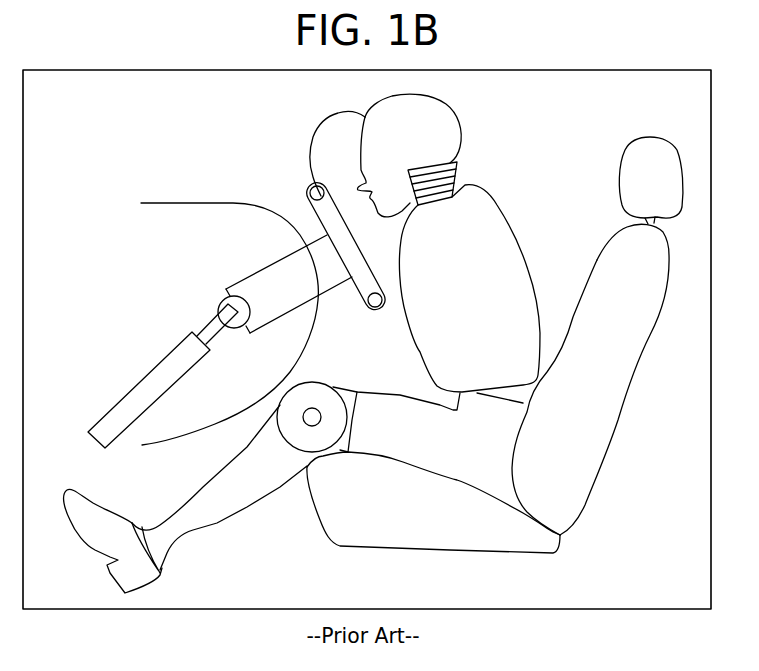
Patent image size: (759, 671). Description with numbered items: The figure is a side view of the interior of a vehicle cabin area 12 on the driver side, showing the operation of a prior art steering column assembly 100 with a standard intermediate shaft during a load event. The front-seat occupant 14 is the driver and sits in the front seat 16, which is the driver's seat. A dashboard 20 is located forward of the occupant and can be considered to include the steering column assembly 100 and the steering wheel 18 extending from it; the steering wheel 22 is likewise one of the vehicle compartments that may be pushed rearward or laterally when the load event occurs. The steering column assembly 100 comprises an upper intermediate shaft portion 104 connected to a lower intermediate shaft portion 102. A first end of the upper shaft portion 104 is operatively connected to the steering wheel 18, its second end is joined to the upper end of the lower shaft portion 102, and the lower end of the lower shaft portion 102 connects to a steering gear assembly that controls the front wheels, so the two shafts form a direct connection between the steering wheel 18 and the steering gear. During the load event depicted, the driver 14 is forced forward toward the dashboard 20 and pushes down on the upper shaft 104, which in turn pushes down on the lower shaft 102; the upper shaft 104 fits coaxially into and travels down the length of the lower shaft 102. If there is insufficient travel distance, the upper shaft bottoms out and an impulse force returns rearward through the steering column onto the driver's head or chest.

The vehicle cabin area 12 is at (645, 71).
The front-seat occupant 14 is at (497, 265).
The front seat 16 is at (577, 455).
The steering wheel 18 is at (310, 187).
The dashboard 20 is at (198, 203).
The steering wheel 22 is at (337, 131).
The steering column assembly 100 is at (147, 350).
The lower intermediate shaft portion 102 is at (131, 391).
The upper intermediate shaft portion 104 is at (212, 320).